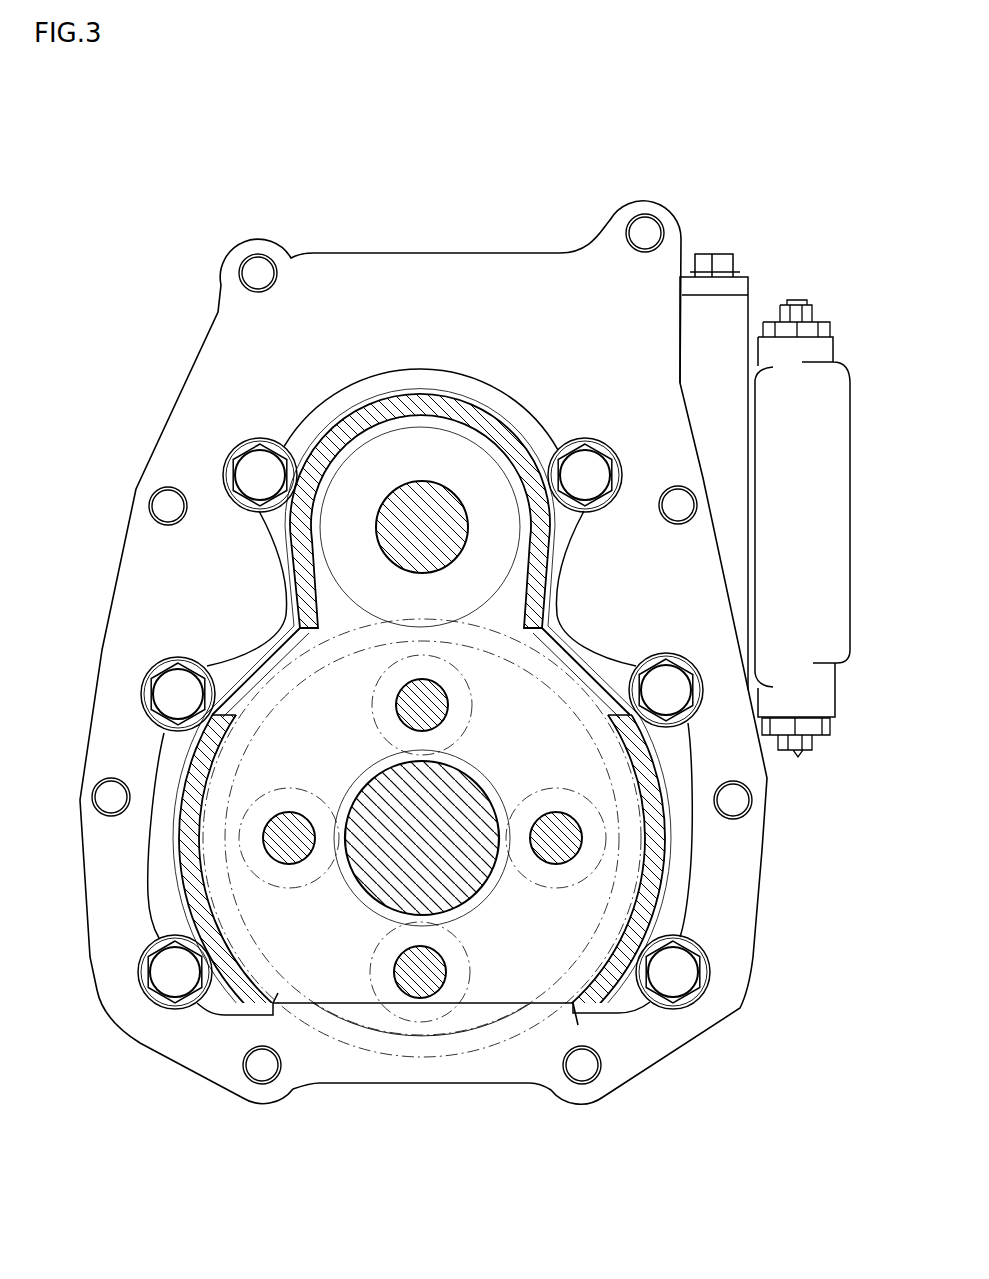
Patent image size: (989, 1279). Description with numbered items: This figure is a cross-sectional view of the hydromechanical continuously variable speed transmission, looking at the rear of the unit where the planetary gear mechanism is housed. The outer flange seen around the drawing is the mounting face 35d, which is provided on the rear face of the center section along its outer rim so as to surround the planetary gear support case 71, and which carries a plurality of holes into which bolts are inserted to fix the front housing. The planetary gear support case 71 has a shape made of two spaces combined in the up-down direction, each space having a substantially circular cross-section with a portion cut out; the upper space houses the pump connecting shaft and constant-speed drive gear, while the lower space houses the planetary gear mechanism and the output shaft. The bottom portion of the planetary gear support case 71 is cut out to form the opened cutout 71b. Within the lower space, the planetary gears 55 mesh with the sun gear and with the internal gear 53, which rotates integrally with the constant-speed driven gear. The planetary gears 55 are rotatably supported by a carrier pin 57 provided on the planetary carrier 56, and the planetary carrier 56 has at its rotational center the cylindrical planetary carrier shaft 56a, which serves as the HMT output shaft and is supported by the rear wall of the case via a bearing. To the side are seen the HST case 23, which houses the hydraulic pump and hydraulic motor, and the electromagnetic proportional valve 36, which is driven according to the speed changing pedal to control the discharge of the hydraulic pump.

The mounting face 35d is at (313, 270).
The planetary gear support case 71 is at (392, 403).
The opened cutout 71b is at (547, 1020).
The HST case 23 is at (713, 317).
The electromagnetic proportional valve 36 is at (781, 410).
The planetary gears 55 is at (218, 1012).
The planetary carrier 56 is at (428, 1035).
The planetary carrier shaft 56a is at (380, 882).
The carrier pin 57 is at (400, 993).
The internal gear 53 is at (504, 1040).